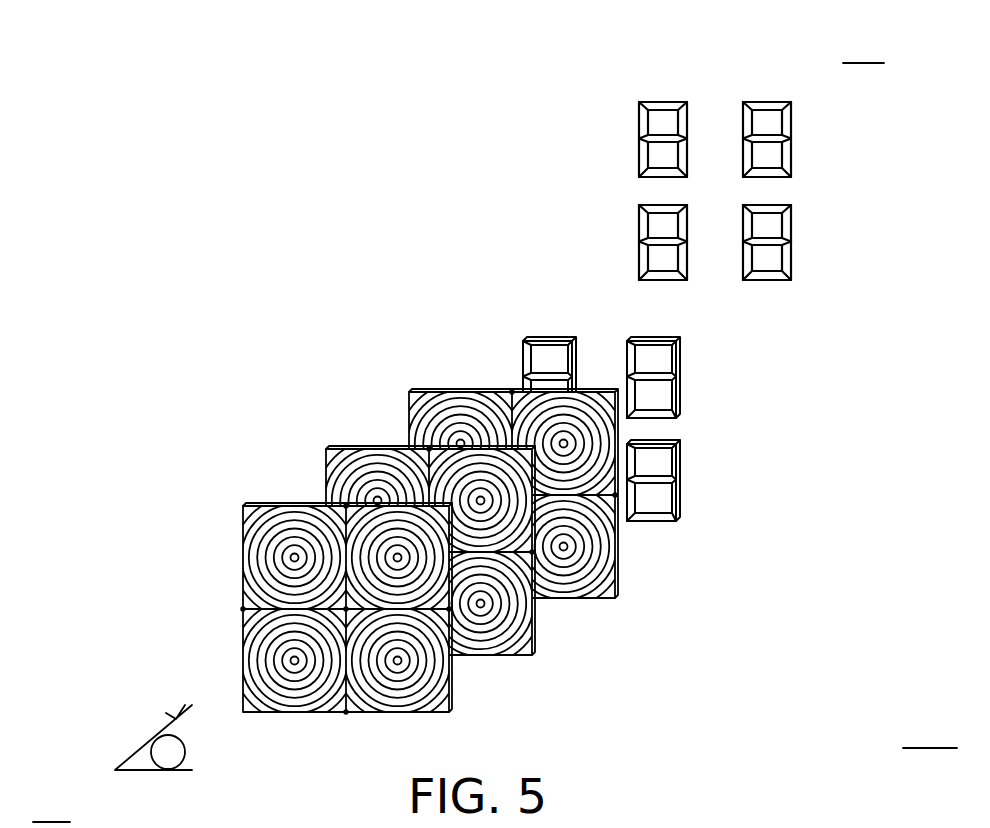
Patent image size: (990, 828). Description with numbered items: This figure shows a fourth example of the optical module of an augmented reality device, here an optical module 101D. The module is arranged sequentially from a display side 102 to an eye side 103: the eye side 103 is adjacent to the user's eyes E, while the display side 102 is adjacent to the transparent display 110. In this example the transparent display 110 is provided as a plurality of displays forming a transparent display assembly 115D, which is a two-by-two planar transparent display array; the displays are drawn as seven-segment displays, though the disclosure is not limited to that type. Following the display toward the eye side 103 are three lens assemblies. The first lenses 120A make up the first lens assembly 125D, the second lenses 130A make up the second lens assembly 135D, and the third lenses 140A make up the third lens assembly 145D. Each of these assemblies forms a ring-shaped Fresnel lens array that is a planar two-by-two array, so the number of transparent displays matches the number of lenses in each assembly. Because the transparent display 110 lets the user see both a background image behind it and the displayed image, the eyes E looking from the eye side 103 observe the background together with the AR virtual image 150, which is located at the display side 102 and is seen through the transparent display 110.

The transparent display 110 is at (538, 346).
The transparent display assembly 115D is at (673, 360).
The first lens 120A is at (556, 448).
The first lens assembly 125D is at (600, 430).
The second lens 130A is at (504, 506).
The second lens assembly 135D is at (513, 520).
The third lens 140A is at (422, 563).
The third lens assembly 145D is at (430, 588).
The AR virtual image 150 is at (667, 105).
The optical module 101D is at (930, 733).
The display side 102 is at (863, 48).
The eye side 103 is at (51, 807).
The eyes E is at (137, 748).